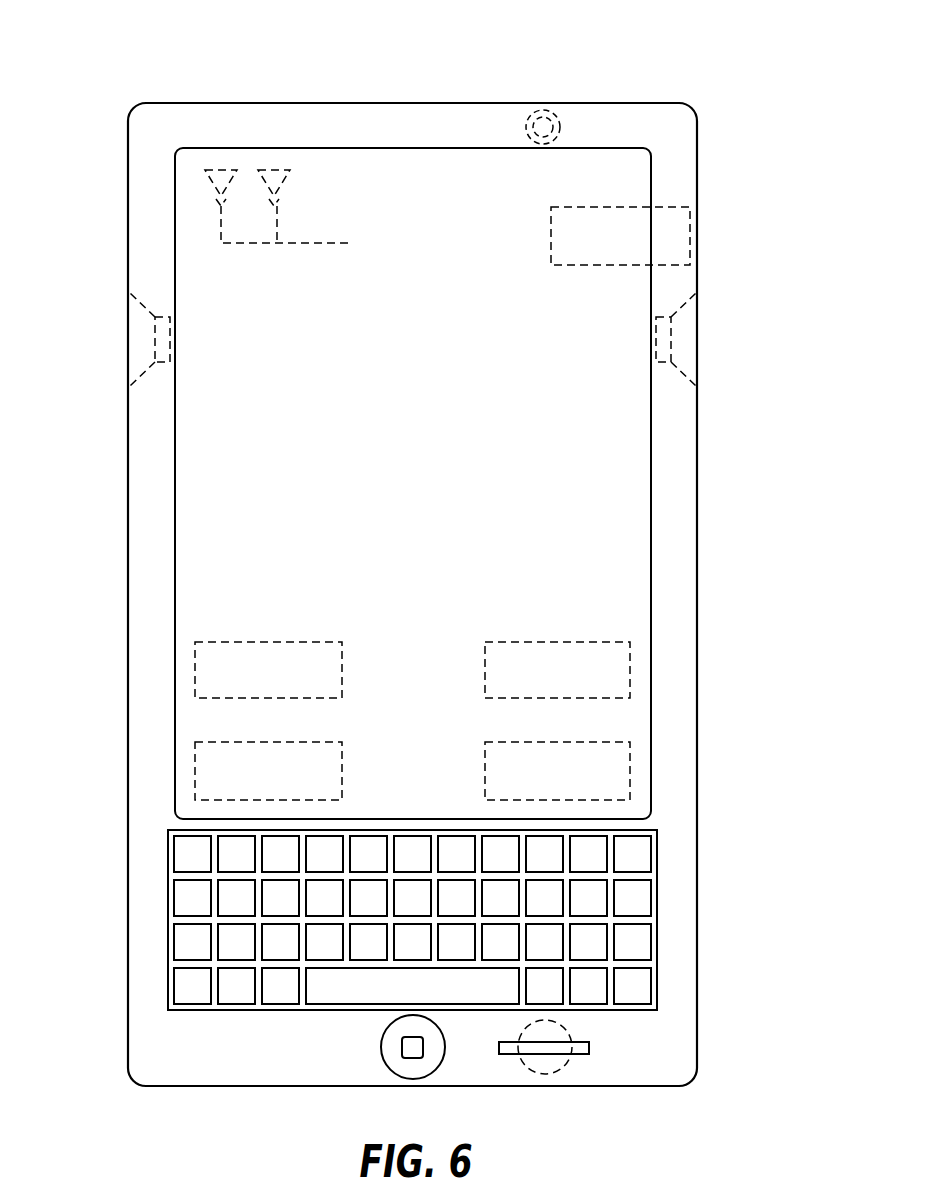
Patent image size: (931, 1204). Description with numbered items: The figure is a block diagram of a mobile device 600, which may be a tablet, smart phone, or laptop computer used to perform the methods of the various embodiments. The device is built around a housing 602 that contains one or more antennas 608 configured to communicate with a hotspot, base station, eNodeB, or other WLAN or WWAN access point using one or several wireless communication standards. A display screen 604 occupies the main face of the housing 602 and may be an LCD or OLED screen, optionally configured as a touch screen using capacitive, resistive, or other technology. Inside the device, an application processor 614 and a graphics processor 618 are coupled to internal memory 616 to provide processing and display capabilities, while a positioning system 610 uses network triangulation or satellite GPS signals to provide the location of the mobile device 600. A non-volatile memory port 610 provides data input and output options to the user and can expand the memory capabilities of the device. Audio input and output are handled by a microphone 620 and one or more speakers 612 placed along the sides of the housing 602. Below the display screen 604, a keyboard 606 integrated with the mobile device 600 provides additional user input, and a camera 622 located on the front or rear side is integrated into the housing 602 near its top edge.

The mobile device 600 is at (663, 38).
The housing 602 is at (330, 102).
The display screen 604 is at (627, 507).
The keyboard 606 is at (657, 920).
The antennas 608 is at (277, 168).
The positioning system / non-volatile memory port 610 is at (698, 236).
The speakers 612 is at (128, 343).
The application processor 614 is at (557, 640).
The internal memory 616 is at (557, 740).
The graphics processor 618 is at (267, 740).
The microphone 620 is at (543, 1075).
The camera 622 is at (542, 110).